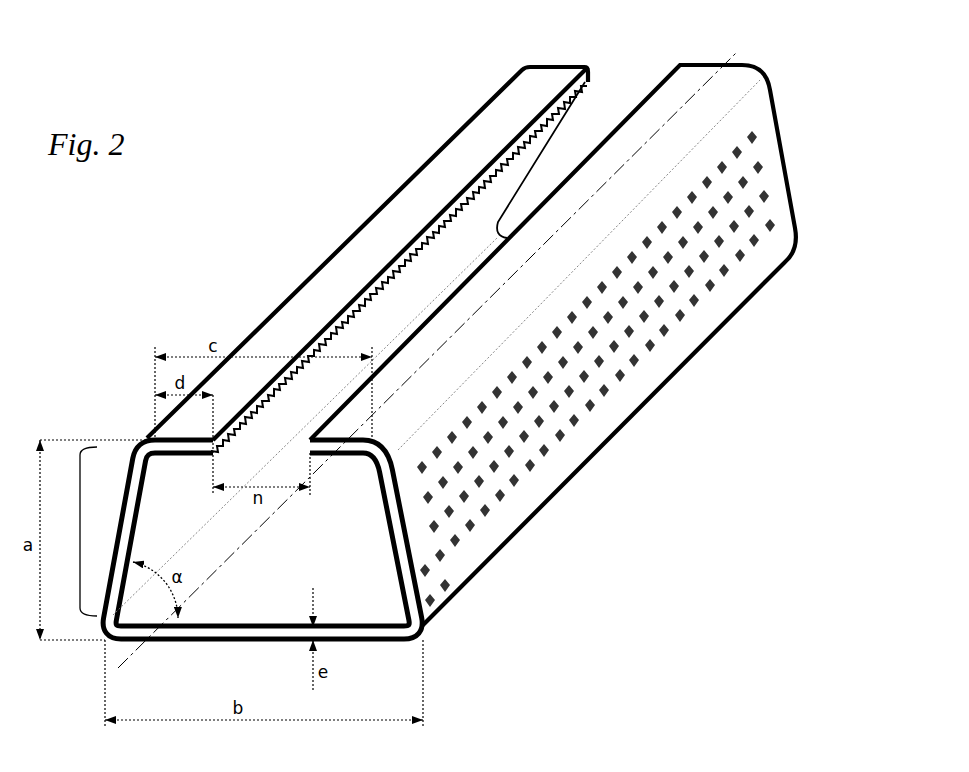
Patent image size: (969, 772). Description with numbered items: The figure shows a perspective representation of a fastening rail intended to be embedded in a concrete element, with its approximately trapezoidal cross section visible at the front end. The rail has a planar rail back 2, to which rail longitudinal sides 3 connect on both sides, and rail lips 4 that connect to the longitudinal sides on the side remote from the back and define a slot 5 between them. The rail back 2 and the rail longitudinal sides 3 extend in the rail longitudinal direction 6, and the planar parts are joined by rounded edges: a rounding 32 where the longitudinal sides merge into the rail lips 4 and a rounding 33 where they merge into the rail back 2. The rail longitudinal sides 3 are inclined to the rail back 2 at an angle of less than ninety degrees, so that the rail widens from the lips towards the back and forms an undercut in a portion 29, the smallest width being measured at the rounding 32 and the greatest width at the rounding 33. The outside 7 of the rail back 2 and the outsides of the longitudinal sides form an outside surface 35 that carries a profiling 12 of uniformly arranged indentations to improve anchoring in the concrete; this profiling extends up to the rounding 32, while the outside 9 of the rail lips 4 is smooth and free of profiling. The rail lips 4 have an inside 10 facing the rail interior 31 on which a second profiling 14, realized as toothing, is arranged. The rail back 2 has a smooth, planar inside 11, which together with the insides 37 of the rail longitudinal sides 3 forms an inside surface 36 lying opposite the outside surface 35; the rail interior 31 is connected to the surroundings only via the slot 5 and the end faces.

The rail back 2 is at (253, 634).
The rail longitudinal sides 3 is at (618, 387).
The rail lips 4 is at (545, 78).
The slot 5 is at (613, 80).
The rail longitudinal direction 6 is at (123, 648).
The outside of the rail back 7 is at (393, 607).
The outside of the rail lips 9 is at (327, 290).
The inside of the rail lips 10 is at (183, 455).
The inside of the rail back 11 is at (421, 633).
The profiling 12 is at (549, 452).
The second profiling 14 is at (282, 401).
The portion 29 is at (73, 531).
The rail interior 31 is at (377, 566).
The rounding 32 is at (518, 67).
The rounding 33 is at (407, 638).
The outside surface 35 is at (750, 182).
The inside surface 36 is at (268, 587).
The insides of the rail longitudinal sides 37 is at (152, 522).